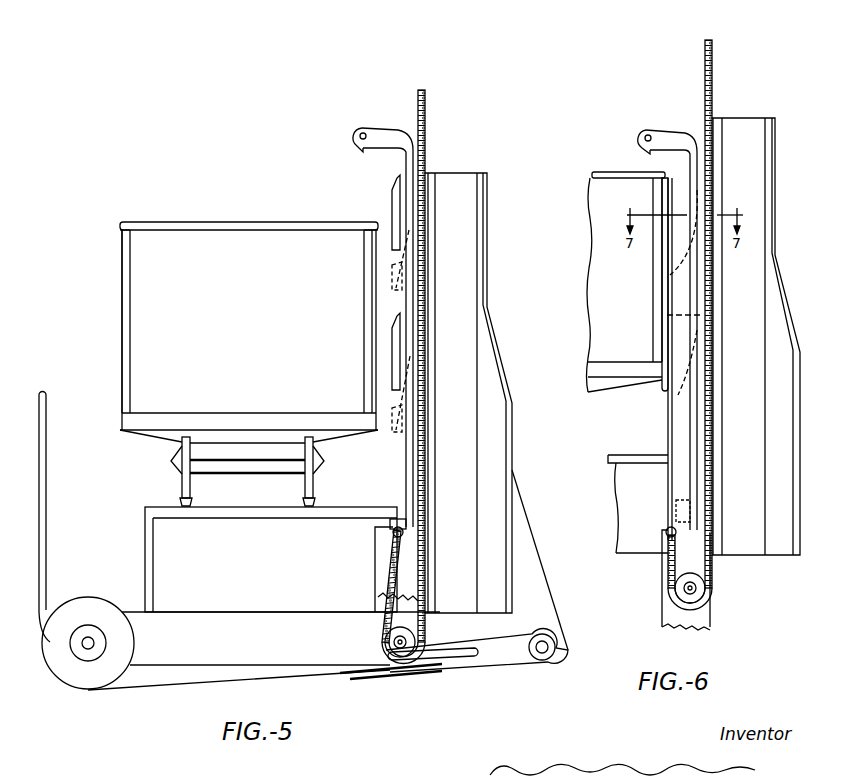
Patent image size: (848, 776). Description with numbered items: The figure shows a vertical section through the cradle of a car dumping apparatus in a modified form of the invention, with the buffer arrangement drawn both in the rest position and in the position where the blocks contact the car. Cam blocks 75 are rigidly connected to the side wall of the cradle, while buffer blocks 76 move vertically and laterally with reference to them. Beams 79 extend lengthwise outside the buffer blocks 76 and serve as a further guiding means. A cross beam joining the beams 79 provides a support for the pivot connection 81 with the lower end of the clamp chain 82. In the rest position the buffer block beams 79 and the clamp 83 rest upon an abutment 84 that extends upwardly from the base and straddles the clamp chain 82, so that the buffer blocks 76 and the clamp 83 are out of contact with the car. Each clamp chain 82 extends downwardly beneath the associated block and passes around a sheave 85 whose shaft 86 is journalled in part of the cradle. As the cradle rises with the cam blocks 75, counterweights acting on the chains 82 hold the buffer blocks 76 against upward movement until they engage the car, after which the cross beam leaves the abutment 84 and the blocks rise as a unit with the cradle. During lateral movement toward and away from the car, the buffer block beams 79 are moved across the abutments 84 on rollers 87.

In FIG. 5, the cam block 75 is at (392, 284).
In FIG. 6, the cam block 75 is at (668, 275).
In FIG. 5, the buffer block 76 is at (392, 204).
In FIG. 6, the buffer block 76 is at (668, 252).
In FIG. 5, the beam 79 is at (404, 488).
In FIG. 6, the beam 79 is at (668, 431).
In FIG. 5, the pivot connection 81 is at (392, 534).
In FIG. 5, the clamp chain 82 is at (390, 578).
In FIG. 6, the clamp chain 82 is at (670, 600).
In FIG. 5, the clamp 83 is at (396, 120).
In FIG. 6, the clamp 83 is at (667, 330).
In FIG. 5, the abutment 84 is at (377, 591).
In FIG. 6, the abutment 84 is at (664, 620).
In FIG. 5, the sheave 85 is at (388, 641).
In FIG. 6, the sheave 85 is at (668, 586).
In FIG. 5, the shaft 86 is at (408, 641).
In FIG. 6, the shaft 86 is at (700, 588).
In FIG. 6, the roller 87 is at (680, 508).